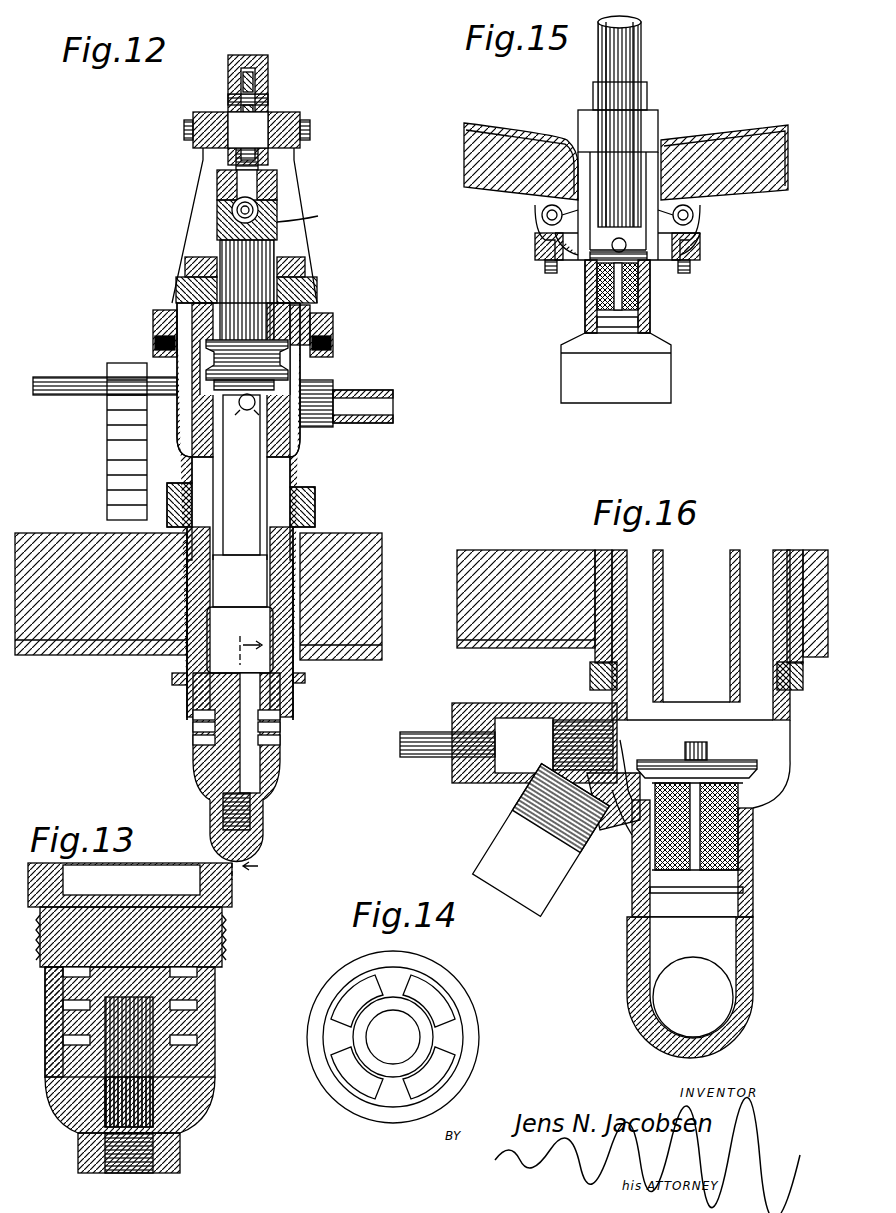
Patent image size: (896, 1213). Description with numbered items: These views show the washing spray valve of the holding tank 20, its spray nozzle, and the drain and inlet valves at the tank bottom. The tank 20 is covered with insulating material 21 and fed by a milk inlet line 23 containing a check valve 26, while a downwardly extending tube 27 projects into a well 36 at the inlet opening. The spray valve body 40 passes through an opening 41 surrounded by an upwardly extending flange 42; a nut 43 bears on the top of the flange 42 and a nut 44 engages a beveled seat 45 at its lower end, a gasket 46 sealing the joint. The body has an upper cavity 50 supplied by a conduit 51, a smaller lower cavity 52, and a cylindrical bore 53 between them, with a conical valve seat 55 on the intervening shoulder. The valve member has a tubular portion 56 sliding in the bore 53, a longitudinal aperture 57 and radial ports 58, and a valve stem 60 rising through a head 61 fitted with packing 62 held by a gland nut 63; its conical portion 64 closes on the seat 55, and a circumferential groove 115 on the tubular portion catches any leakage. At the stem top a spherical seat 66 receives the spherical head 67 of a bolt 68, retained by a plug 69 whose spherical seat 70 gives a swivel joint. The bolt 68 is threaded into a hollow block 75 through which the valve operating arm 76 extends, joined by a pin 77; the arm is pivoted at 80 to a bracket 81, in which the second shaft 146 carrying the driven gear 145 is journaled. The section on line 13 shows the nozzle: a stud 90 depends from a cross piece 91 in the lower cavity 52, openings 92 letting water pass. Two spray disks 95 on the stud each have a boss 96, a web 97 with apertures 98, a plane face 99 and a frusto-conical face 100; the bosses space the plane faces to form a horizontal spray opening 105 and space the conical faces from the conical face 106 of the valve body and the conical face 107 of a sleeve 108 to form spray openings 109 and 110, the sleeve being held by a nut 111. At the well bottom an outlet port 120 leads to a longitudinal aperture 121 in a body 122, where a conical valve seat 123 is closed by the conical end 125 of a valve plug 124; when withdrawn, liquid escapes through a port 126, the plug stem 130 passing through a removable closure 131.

In FIG. 12, the section line 13 is at (243, 639).
In FIG. 13, the section line 13 is at (256, 867).
In FIG. 12, the holding tank 20 is at (68, 650).
In FIG. 15, the holding tank 20 is at (730, 128).
In FIG. 12, the insulating material 21 is at (382, 570).
In FIG. 15, the insulating material 21 is at (788, 162).
In FIG. 16, the insulating material 21 is at (457, 570).
In FIG. 15, the milk inlet line 23 is at (671, 378).
In FIG. 16, the milk inlet line 23 is at (753, 1010).
In FIG. 15, the check valve 26 is at (650, 268).
In FIG. 16, the check valve 26 is at (735, 757).
In FIG. 15, the downwardly extending tube 27 is at (641, 60).
In FIG. 16, the downwardly extending tube 27 is at (740, 565).
In FIG. 15, the well 36 is at (700, 200).
In FIG. 16, the well 36 is at (790, 548).
In FIG. 12, the valve body 40 is at (300, 470).
In FIG. 13, the valve body 40 is at (232, 895).
In FIG. 12, the opening 41 is at (185, 575).
In FIG. 12, the flange 42 is at (293, 540).
In FIG. 12, the nut 43 is at (315, 505).
In FIG. 12, the nut 44 is at (280, 700).
In FIG. 12, the beveled seat 45 is at (305, 680).
In FIG. 12, the gasket 46 is at (297, 688).
In FIG. 12, the upper cavity 50 is at (320, 330).
In FIG. 12, the conduit 51 is at (385, 390).
In FIG. 12, the lower cavity 52 is at (185, 665).
In FIG. 12, the cylindrical bore 53 is at (240, 581).
In FIG. 12, the conical valve seat 55 is at (300, 415).
In FIG. 12, the lower tubular portion 56 is at (215, 458).
In FIG. 12, the longitudinal aperture 57 is at (241, 475).
In FIG. 12, the radial ports 58 is at (247, 424).
In FIG. 12, the valve stem 60 is at (274, 250).
In FIG. 12, the head 61 is at (300, 320).
In FIG. 12, the packing 62 is at (176, 290).
In FIG. 12, the gland nut 63 is at (305, 265).
In FIG. 12, the conical portion 64 is at (214, 372).
In FIG. 12, the spherical seat 66 is at (308, 212).
In FIG. 12, the spherical head 67 is at (277, 210).
In FIG. 12, the bolt 68 is at (258, 170).
In FIG. 12, the plug 69 is at (277, 175).
In FIG. 12, the spherical seat 70 is at (232, 205).
In FIG. 12, the hollow block 75 is at (270, 72).
In FIG. 12, the valve operating arm 76 is at (248, 70).
In FIG. 12, the pin 77 is at (270, 100).
In FIG. 12, the pivot 80 is at (310, 135).
In FIG. 12, the bracket 81 is at (203, 160).
In FIG. 12, the stud 90 is at (230, 765).
In FIG. 13, the stud 90 is at (105, 1100).
In FIG. 12, the cross piece 91 is at (251, 667).
In FIG. 13, the cross piece 91 is at (165, 903).
In FIG. 12, the openings 92 is at (270, 700).
In FIG. 14, the spray disks 95 is at (479, 1037).
In FIG. 13, the boss 96 is at (129, 1062).
In FIG. 14, the boss 96 is at (412, 1015).
In FIG. 13, the web 97 is at (45, 1022).
In FIG. 14, the web 97 is at (400, 975).
In FIG. 14, the apertures 98 is at (440, 1068).
In FIG. 13, the plane face 99 is at (215, 998).
In FIG. 13, the frusto-conical face 100 is at (197, 985).
In FIG. 12, the spray opening 105 is at (193, 727).
In FIG. 13, the spray opening 105 is at (197, 1010).
In FIG. 12, the conical face 106 is at (300, 652).
In FIG. 13, the conical face 106 is at (222, 950).
In FIG. 16, the conical face 106 is at (413, 625).
In FIG. 13, the conical face 107 is at (215, 1060).
In FIG. 12, the sleeve 108 is at (273, 800).
In FIG. 13, the sleeve 108 is at (205, 1095).
In FIG. 12, the spray opening 109 is at (193, 713).
In FIG. 13, the spray opening 109 is at (205, 970).
In FIG. 12, the spray opening 110 is at (193, 745).
In FIG. 13, the spray opening 110 is at (197, 1042).
In FIG. 12, the nut 111 is at (265, 825).
In FIG. 13, the nut 111 is at (78, 1158).
In FIG. 12, the circumferential groove 115 is at (274, 385).
In FIG. 15, the outlet port 120 is at (605, 245).
In FIG. 16, the outlet port 120 is at (637, 762).
In FIG. 16, the longitudinal aperture 121 is at (600, 770).
In FIG. 16, the body 122 is at (600, 630).
In FIG. 16, the conical valve seat 123 is at (637, 772).
In FIG. 16, the valve plug 124 is at (525, 704).
In FIG. 16, the conical end 125 is at (562, 786).
In FIG. 16, the port 126 is at (616, 819).
In FIG. 16, the stem 130 is at (430, 722).
In FIG. 16, the closure 131 is at (470, 690).
In FIG. 12, the driven gear 145 is at (107, 473).
In FIG. 12, the second shaft 146 is at (55, 395).